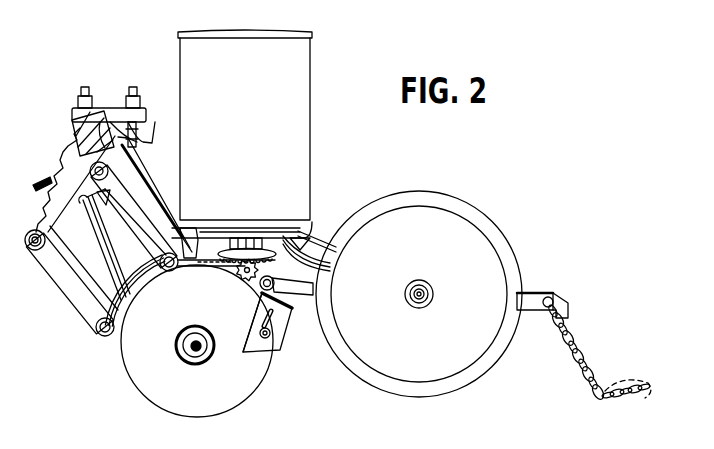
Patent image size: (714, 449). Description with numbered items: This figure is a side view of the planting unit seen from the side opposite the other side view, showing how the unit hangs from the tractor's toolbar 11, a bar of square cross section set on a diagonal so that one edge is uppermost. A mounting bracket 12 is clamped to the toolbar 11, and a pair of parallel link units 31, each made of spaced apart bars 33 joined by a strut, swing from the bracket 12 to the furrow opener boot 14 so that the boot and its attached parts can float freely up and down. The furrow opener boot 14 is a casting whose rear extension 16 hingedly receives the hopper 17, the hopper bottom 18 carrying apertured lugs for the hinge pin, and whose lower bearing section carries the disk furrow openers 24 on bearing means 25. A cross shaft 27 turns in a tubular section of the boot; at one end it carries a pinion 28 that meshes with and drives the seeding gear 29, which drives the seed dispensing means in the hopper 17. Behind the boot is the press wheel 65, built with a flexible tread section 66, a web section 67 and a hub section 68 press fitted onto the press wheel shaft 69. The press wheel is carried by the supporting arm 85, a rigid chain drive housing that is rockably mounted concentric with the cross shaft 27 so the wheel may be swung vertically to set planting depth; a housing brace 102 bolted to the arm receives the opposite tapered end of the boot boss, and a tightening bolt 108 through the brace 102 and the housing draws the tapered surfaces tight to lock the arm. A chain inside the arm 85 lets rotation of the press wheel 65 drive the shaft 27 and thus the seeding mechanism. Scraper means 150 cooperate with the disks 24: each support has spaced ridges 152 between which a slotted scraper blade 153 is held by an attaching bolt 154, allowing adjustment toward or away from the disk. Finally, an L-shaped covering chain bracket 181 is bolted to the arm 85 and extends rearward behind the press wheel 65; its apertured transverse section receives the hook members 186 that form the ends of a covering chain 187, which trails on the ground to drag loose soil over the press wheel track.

The toolbar 11 is at (100, 117).
The mounting bracket 12 is at (62, 149).
The furrow opener boot 14 is at (417, 233).
The rear extension 16 is at (283, 242).
The hopper 17 is at (304, 118).
The hopper bottom 18 is at (503, 287).
The disk furrow openers 24 is at (152, 388).
The bearing means 25 is at (178, 347).
The cross shaft 27 is at (244, 276).
The pinion 28 is at (260, 289).
The seeding gear 29 is at (260, 248).
The parallel link units 31 is at (135, 178).
The bars 33 is at (143, 195).
The press wheel 65 is at (492, 218).
The tread section 66 is at (489, 350).
The web section 67 is at (541, 309).
The hub section 68 is at (418, 283).
The press wheel shaft 69 is at (428, 296).
The press wheel supporting arm 85 is at (326, 235).
The housing brace 102 is at (308, 280).
The tightening bolt 108 is at (296, 296).
The scraper means 150 is at (258, 364).
The ridges 152 is at (258, 319).
The scraper blade 153 is at (272, 347).
The attaching bolt 154 is at (245, 356).
The covering chain bracket 181 is at (528, 291).
The hook or attaching members 186 is at (566, 348).
The covering chain 187 is at (594, 403).